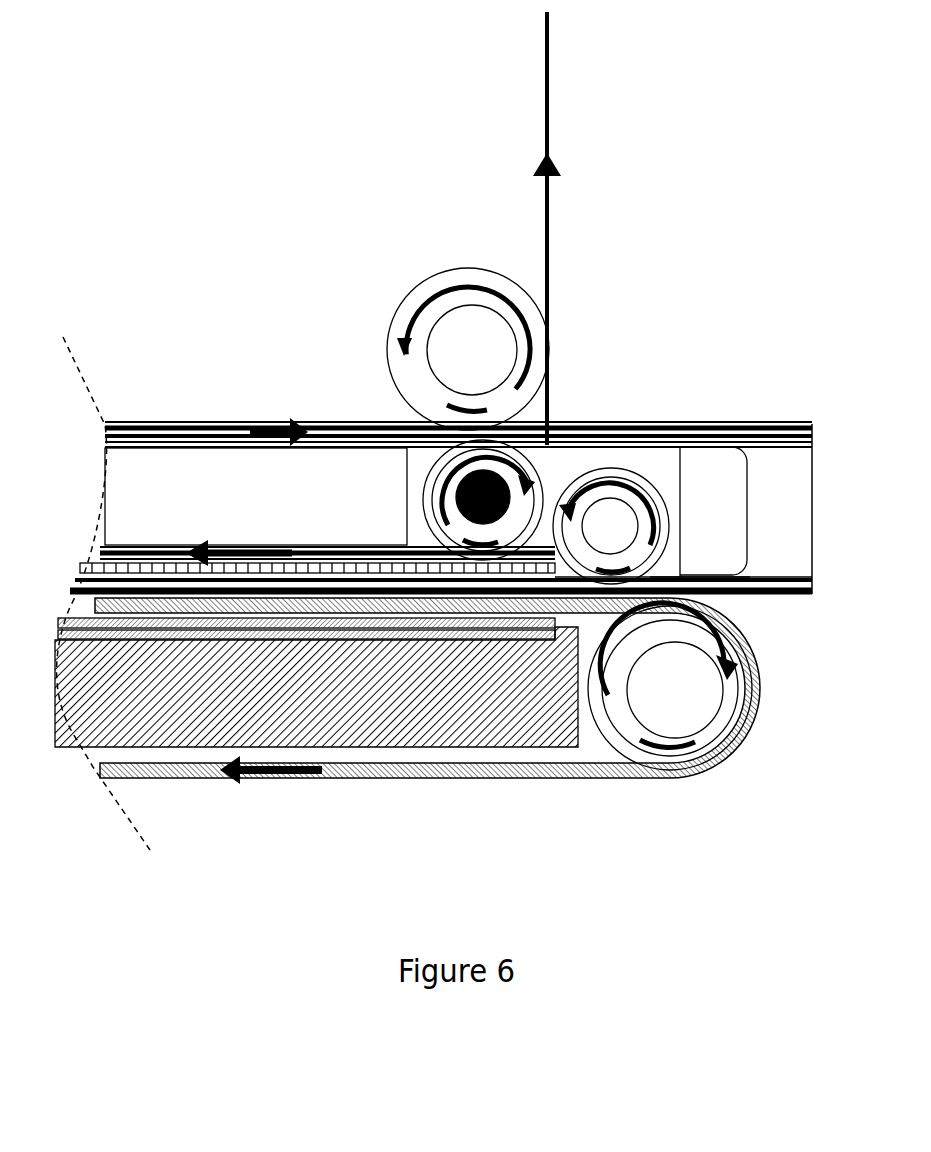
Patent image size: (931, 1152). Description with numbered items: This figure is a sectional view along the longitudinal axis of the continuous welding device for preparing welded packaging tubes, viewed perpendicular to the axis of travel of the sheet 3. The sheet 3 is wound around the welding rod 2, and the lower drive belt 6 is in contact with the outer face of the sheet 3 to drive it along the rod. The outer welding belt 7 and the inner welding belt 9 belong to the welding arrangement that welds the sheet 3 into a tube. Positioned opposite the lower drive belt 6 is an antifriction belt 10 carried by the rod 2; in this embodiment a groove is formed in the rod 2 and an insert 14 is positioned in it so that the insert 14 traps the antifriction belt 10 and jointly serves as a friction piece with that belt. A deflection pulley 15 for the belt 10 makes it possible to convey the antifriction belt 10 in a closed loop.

The welding rod 2 is at (213, 470).
The sheet 3 is at (750, 427).
The lower drive belt 6 is at (607, 780).
The outer welding belt 7 is at (547, 118).
The inner welding belt 9 is at (537, 467).
The antifriction belt 10 is at (632, 470).
The insert 14 is at (363, 568).
The deflection pulley 15 is at (668, 555).